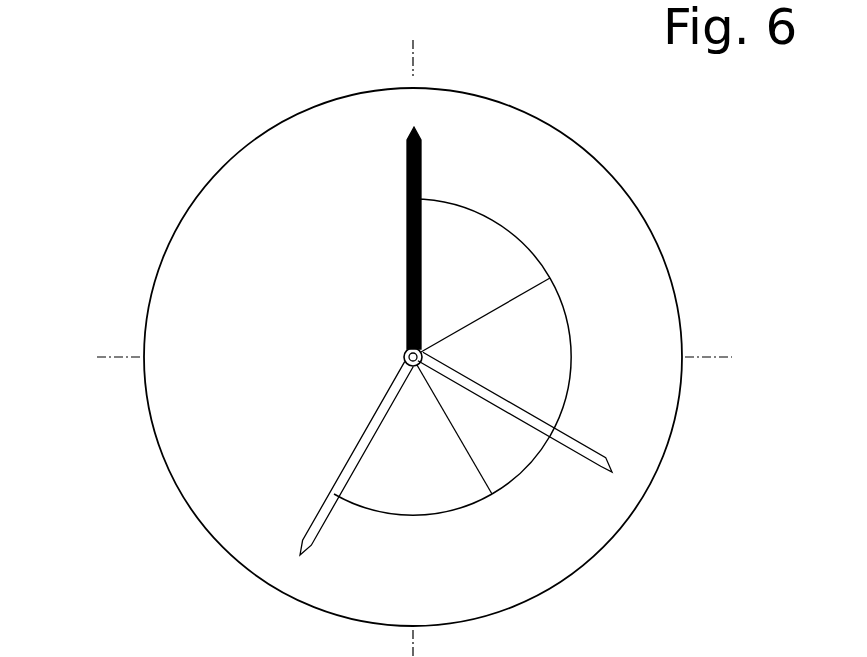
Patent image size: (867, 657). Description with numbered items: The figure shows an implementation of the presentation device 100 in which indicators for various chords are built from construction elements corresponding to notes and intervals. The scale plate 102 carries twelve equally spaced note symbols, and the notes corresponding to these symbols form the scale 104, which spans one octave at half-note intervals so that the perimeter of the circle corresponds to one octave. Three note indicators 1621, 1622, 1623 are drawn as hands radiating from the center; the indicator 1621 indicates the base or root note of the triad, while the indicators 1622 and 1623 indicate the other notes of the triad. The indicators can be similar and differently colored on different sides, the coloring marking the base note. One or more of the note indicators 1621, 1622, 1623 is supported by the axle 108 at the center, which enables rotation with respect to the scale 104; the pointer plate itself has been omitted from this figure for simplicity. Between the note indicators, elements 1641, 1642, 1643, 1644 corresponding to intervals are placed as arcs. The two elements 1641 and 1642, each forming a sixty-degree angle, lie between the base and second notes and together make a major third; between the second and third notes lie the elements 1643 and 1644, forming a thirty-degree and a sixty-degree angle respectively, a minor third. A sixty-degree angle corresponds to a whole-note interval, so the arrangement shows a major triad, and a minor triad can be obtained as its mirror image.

The presentation device 100 is at (124, 131).
The scale plate 102 is at (192, 201).
The scale 104 is at (408, 103).
The axle 108 is at (405, 351).
The note indicator 1621 is at (406, 175).
The note indicator 1622 is at (571, 433).
The note indicator 1623 is at (320, 500).
The interval element 1641 is at (507, 226).
The interval element 1642 is at (567, 305).
The interval element 1643 is at (527, 487).
The interval element 1644 is at (415, 515).